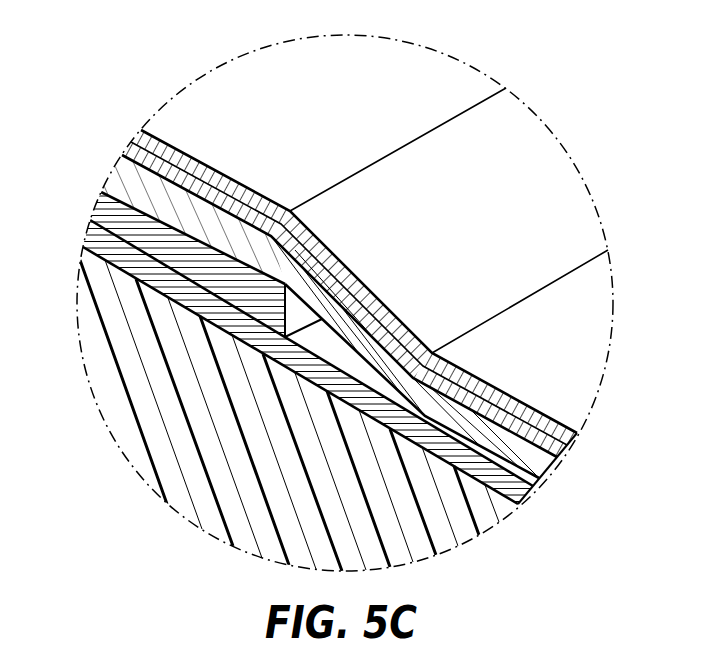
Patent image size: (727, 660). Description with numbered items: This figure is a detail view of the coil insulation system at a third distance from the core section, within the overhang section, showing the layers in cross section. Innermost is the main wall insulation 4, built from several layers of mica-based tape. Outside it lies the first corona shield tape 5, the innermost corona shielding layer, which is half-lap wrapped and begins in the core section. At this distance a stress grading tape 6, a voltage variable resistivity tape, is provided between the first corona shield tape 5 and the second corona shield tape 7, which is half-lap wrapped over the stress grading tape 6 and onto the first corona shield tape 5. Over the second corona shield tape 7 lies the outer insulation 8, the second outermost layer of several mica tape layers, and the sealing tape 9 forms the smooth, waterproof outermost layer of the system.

The sealing tape 9 is at (200, 123).
The second corona shield tape 7 is at (117, 165).
The stress grading tape 6 is at (102, 202).
The main wall insulation 4 is at (148, 403).
The outer insulation 8 is at (562, 468).
The first corona shield tape 5 is at (527, 490).